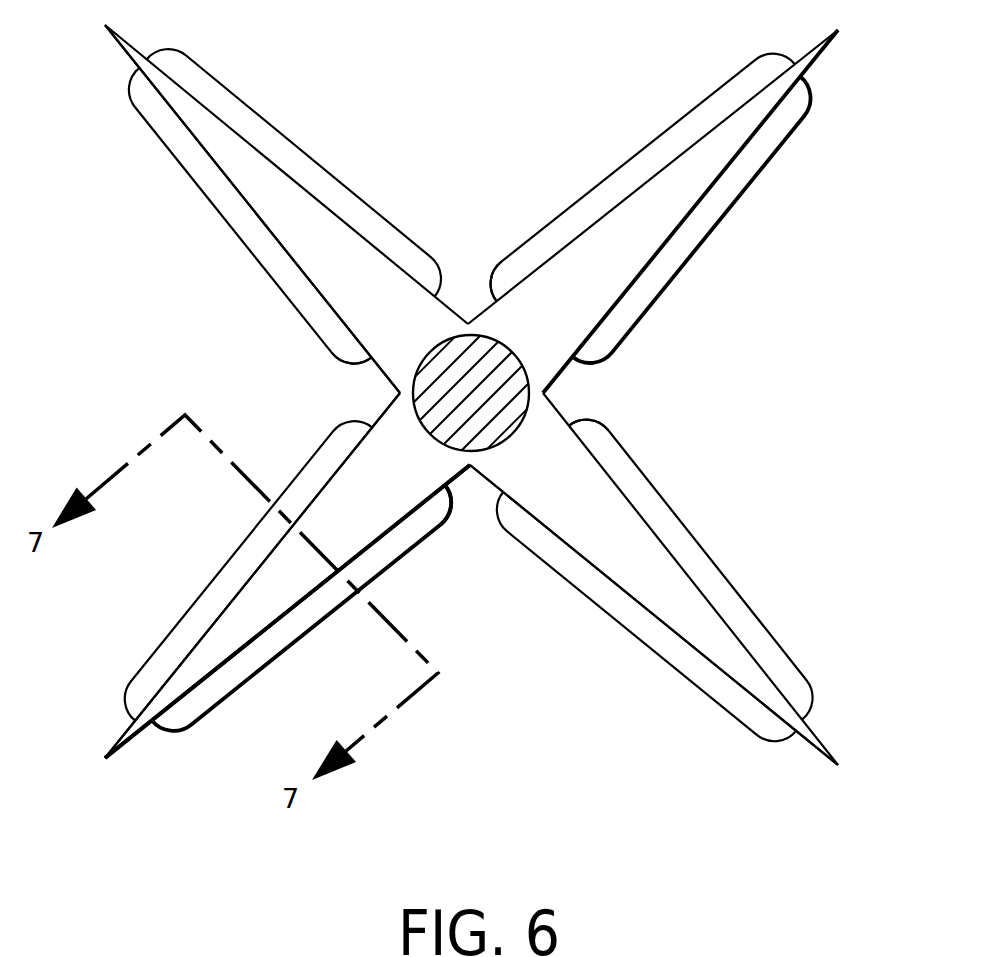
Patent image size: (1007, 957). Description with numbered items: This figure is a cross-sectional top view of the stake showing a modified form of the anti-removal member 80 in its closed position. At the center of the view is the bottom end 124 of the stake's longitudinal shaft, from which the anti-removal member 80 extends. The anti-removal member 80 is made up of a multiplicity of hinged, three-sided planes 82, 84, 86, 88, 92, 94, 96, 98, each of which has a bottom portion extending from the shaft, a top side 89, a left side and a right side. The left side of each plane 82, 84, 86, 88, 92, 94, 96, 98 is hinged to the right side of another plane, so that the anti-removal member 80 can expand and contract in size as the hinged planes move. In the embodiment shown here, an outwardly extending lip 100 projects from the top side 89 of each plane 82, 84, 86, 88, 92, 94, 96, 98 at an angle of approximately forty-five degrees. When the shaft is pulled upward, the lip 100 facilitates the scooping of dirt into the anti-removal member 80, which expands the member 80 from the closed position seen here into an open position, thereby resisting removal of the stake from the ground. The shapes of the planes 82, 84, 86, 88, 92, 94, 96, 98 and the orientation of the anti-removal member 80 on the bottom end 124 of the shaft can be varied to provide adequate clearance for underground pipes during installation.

The anti-removal member 80 is at (827, 376).
The hinged three-sided plane 82 is at (677, 635).
The hinged three-sided plane 84 is at (262, 632).
The hinged three-sided plane 86 is at (213, 622).
The hinged three-sided plane 88 is at (305, 274).
The top side 89 is at (497, 303).
The hinged three-sided plane 92 is at (250, 143).
The hinged three-sided plane 94 is at (693, 143).
The hinged three-sided plane 96 is at (640, 278).
The hinged three-sided plane 98 is at (727, 625).
The outwardly extending lip 100 is at (243, 552).
The bottom end 124 is at (468, 350).